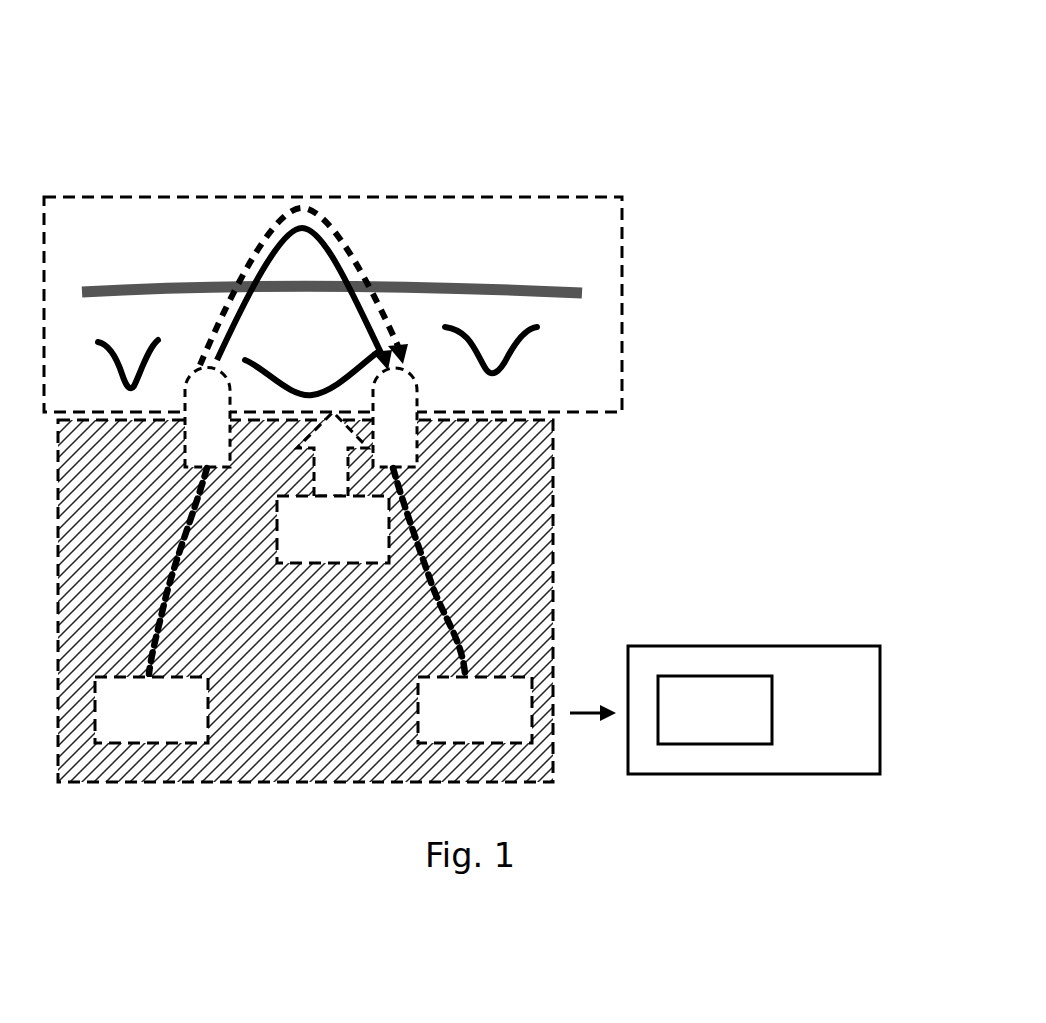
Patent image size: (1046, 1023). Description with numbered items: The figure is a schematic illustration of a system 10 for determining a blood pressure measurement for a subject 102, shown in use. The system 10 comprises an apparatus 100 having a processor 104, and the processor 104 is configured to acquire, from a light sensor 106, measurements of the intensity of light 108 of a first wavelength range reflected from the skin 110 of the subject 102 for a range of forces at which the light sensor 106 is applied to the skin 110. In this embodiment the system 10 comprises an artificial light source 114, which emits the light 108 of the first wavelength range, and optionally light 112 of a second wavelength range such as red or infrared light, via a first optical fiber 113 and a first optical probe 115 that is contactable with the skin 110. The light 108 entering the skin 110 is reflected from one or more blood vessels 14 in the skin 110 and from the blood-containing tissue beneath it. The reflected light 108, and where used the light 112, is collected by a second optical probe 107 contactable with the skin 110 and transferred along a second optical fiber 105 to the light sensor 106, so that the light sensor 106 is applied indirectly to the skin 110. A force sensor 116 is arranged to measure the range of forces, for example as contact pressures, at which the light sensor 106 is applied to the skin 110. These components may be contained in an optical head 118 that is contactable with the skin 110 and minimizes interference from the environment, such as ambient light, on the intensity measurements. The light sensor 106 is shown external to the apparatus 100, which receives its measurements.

The system 10 is at (622, 98).
The blood vessels 14 is at (516, 317).
The apparatus 100 is at (870, 690).
The subject 102 is at (622, 238).
The processor 104 is at (715, 710).
The second optical fiber 105 is at (439, 571).
The light sensor 106 is at (475, 710).
The second optical probe 107 is at (418, 388).
The light of a first wavelength range 108 is at (304, 299).
The skin 110 is at (96, 239).
The light of a second wavelength range 112 is at (321, 286).
The first optical fiber 113 is at (157, 571).
The light source 114 is at (151, 710).
The first optical probe 115 is at (188, 383).
The force sensor 116 is at (333, 487).
The optical head 118 is at (106, 466).